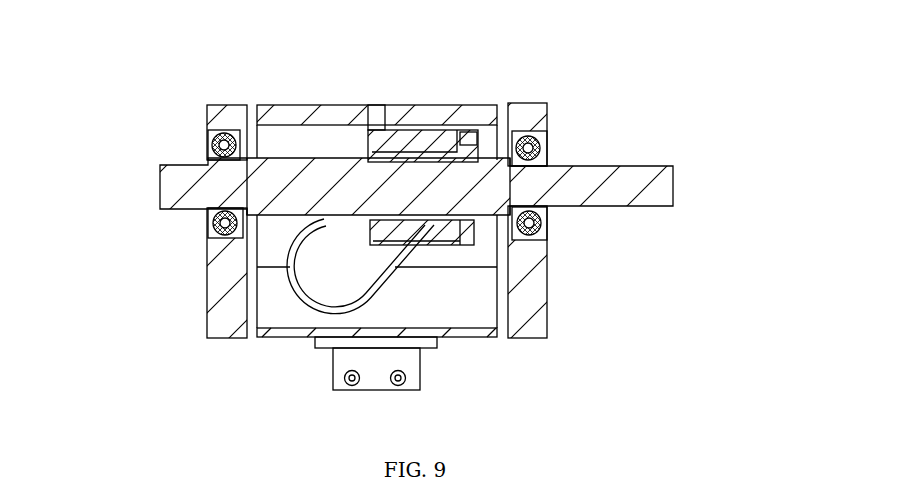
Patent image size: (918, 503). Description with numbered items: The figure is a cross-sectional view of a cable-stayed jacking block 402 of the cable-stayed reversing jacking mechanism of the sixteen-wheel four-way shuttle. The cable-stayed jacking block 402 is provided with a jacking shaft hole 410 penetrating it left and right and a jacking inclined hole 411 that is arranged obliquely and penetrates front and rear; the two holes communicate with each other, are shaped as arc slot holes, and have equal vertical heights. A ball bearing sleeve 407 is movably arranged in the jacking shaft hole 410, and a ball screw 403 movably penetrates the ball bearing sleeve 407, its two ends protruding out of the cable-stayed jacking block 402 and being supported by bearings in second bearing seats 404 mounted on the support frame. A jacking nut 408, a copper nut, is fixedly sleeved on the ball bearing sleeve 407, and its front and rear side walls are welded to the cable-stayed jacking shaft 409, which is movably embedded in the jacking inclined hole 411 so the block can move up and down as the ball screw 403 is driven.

The cable-stayed jacking block 402 is at (289, 117).
The ball screw 403 is at (627, 183).
The second bearing seat 404 is at (530, 285).
The ball bearing sleeve 407 is at (456, 160).
The jacking nut 408 is at (393, 145).
The cable-stayed jacking shaft 409 is at (385, 195).
The jacking shaft hole 410 is at (260, 242).
The jacking inclined hole 411 is at (322, 277).